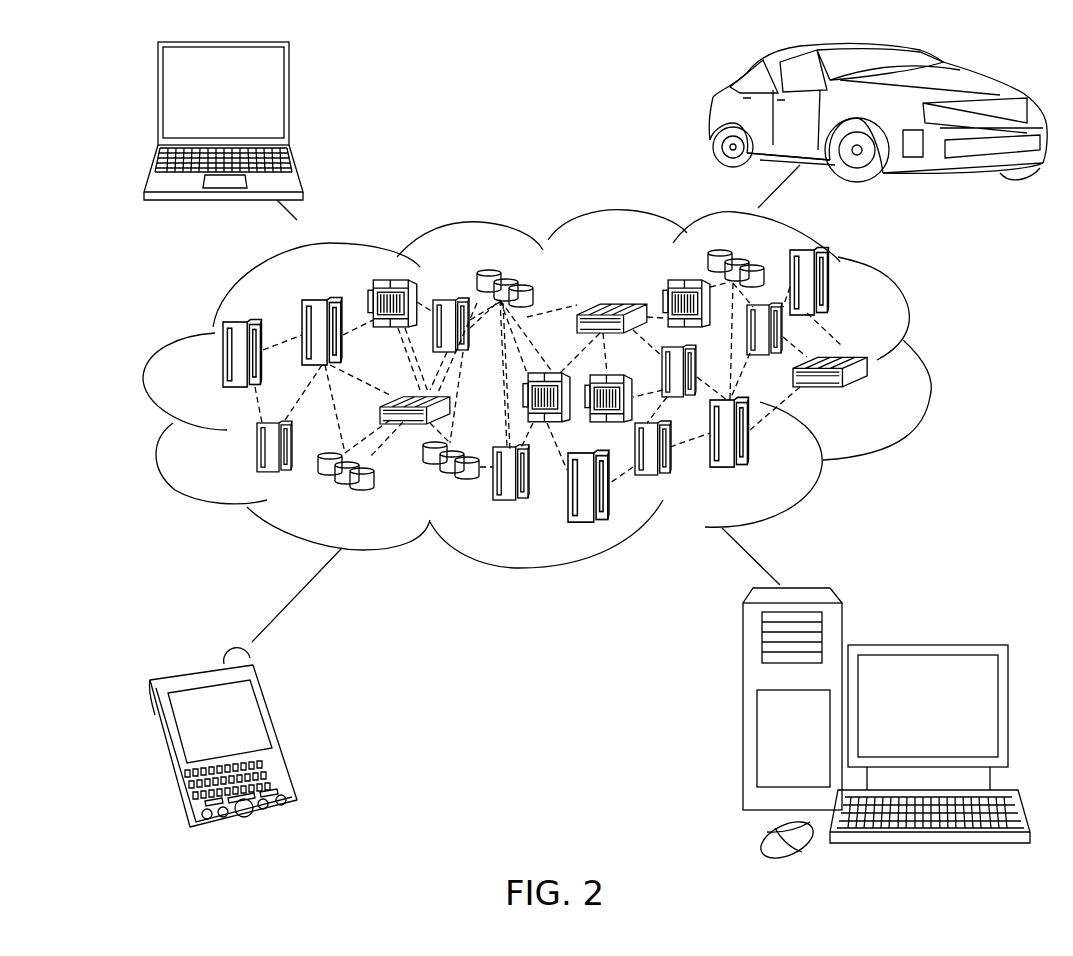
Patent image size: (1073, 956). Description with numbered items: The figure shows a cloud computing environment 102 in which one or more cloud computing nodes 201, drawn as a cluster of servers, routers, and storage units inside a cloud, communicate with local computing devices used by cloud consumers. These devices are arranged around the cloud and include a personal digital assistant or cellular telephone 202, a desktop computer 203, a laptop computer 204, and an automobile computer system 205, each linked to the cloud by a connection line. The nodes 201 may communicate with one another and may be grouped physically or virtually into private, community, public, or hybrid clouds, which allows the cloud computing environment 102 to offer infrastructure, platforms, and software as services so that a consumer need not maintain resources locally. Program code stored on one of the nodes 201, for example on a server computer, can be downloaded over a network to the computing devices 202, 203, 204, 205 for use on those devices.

The cloud computing environment 102 is at (925, 363).
The cloud computing nodes 201 is at (879, 398).
The personal digital assistant (PDA) or cellular telephone 202 is at (280, 733).
The desktop computer 203 is at (925, 645).
The laptop computer 204 is at (289, 100).
The automobile computer system 205 is at (713, 115).